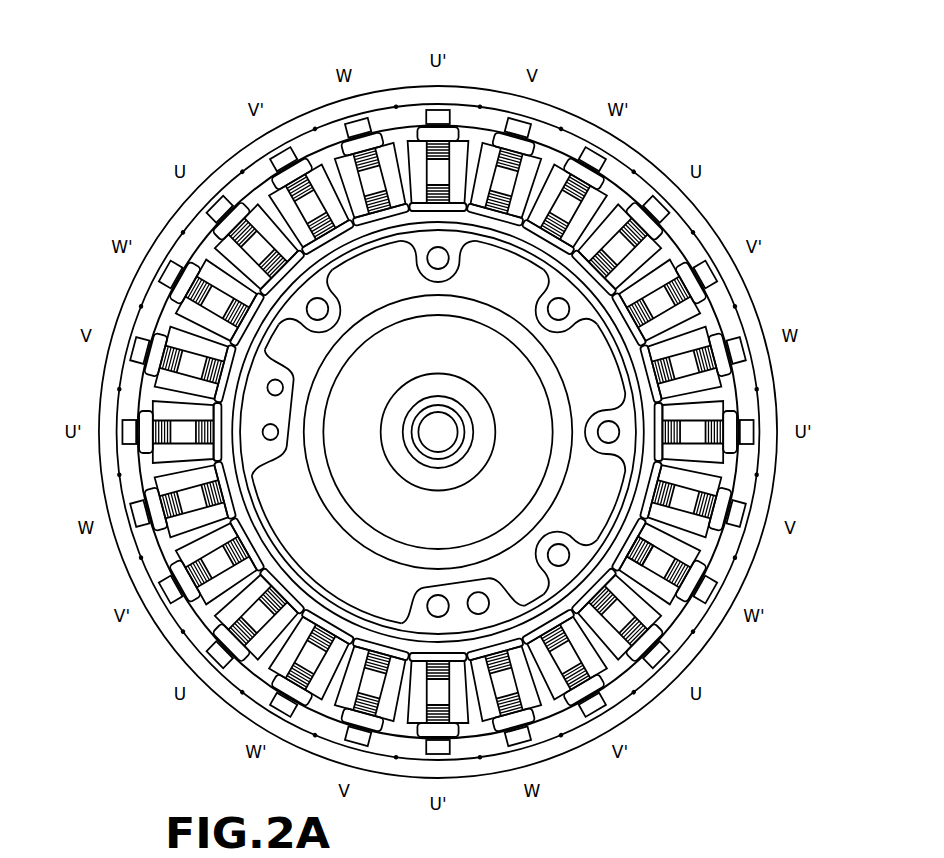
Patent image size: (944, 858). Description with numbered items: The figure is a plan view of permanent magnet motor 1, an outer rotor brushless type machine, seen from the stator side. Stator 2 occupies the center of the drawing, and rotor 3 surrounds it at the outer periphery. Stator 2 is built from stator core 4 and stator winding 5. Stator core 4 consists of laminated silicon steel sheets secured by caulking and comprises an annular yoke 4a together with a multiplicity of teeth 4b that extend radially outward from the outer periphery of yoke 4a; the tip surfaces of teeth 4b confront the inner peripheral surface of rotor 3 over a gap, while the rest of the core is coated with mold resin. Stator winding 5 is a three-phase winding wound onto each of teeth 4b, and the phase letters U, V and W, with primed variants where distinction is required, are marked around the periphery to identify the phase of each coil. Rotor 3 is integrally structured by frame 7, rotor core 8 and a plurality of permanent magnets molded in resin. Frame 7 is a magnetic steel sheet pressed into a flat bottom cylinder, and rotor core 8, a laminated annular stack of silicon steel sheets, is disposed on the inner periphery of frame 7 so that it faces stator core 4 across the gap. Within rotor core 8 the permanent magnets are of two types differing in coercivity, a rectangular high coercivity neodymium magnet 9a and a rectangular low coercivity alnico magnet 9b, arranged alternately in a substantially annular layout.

The permanent magnet motor 1 is at (463, 60).
The stator 2 is at (733, 437).
The rotor 3 is at (792, 378).
The stator core 4 is at (699, 562).
The yoke 4a is at (687, 597).
The teeth 4b is at (714, 632).
The stator winding 5 is at (662, 689).
The frame 7 is at (438, 432).
The rotor core 8 is at (438, 432).
The neodymium magnet 9a is at (438, 404).
The alnico magnet 9b is at (464, 86).